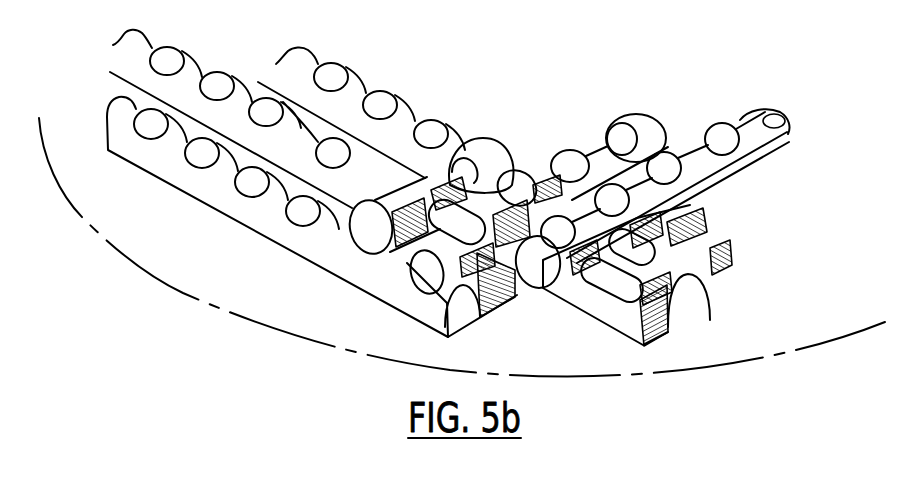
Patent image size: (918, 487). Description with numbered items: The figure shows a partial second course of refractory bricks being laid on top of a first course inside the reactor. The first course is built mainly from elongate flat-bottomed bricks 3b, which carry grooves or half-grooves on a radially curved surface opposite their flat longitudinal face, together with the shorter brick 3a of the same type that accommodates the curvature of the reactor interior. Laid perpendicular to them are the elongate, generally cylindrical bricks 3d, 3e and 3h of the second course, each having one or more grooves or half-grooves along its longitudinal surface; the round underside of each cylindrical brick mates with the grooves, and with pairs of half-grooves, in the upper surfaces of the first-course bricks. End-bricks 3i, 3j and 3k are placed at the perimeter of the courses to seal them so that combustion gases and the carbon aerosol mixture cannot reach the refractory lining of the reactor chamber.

The shorter flat-bottomed grooved brick 3a is at (346, 268).
The flat-bottomed grooved brick 3b is at (366, 175).
The cylindrical grooved brick 3d is at (491, 152).
The cylindrical grooved brick 3e is at (592, 150).
The cylindrical grooved brick 3h is at (748, 123).
The end-brick 3i is at (692, 243).
The end-brick 3j is at (598, 302).
The end-brick 3k is at (391, 262).